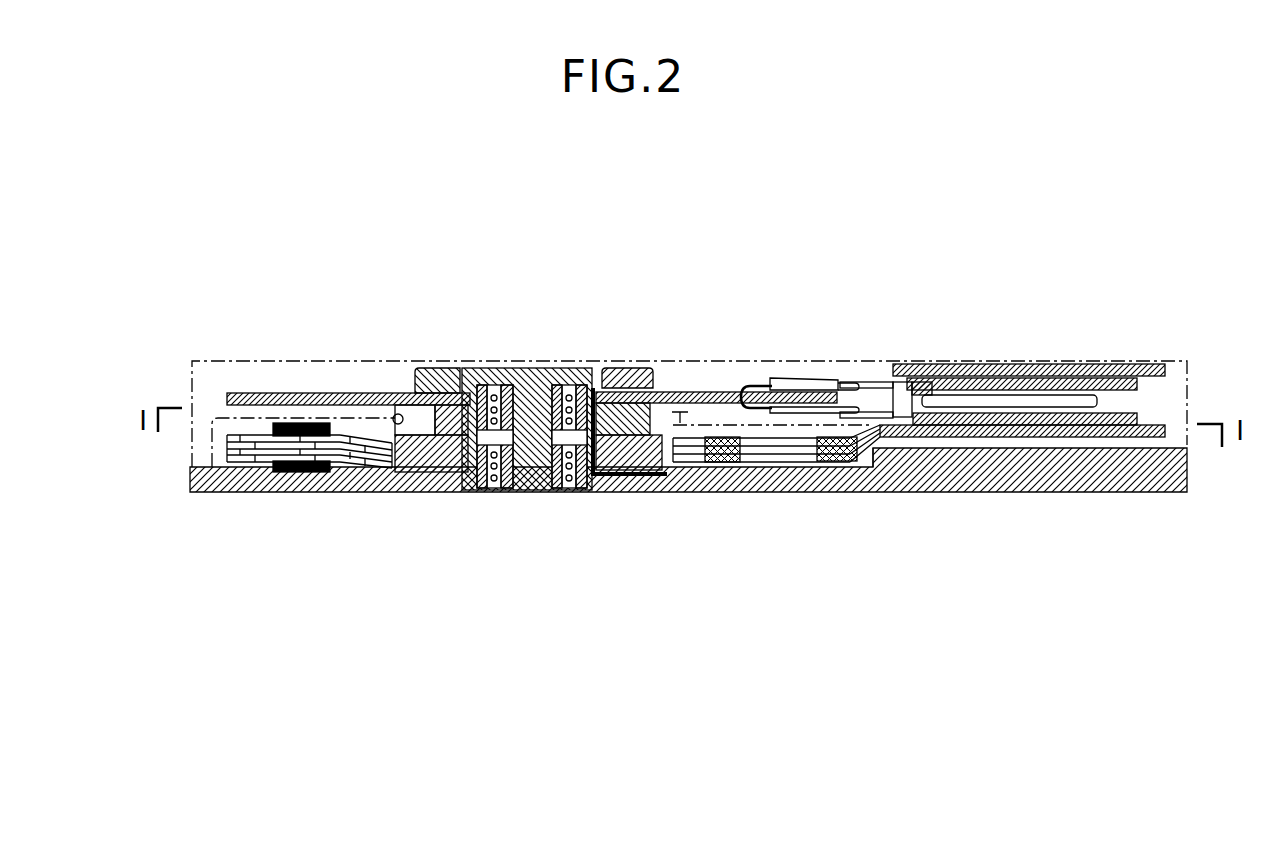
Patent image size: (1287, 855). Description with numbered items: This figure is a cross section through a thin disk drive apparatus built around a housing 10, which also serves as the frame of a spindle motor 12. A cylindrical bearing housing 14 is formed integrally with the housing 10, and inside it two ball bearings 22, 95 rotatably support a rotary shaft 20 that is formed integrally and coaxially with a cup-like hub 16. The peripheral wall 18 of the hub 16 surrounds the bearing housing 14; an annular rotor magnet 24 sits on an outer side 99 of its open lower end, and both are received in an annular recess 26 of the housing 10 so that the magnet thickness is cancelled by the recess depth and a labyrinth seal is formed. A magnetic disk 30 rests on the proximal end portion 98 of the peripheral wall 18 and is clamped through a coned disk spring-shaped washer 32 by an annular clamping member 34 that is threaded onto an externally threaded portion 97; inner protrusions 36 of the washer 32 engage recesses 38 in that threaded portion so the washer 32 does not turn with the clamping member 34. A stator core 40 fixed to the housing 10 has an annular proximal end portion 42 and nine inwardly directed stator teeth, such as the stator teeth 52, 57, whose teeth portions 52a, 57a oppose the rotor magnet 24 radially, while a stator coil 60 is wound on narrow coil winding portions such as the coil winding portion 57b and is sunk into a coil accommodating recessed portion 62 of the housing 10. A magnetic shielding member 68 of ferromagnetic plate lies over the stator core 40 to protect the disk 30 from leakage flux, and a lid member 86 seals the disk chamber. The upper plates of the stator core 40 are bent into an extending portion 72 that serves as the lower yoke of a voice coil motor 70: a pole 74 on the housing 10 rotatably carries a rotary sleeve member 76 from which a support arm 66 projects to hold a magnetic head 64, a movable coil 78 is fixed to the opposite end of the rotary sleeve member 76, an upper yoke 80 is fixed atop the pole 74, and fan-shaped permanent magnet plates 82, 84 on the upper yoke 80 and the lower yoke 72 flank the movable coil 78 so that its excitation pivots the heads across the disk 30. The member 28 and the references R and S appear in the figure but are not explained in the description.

The housing 10 is at (820, 465).
The spindle motor 12 is at (538, 490).
The bearing housing 14 is at (562, 490).
The hub 16 is at (482, 382).
The peripheral wall 18 is at (482, 485).
The rotary shaft 20 is at (560, 385).
The ball bearing 22 is at (510, 370).
The rotor magnet 24 is at (440, 475).
The annular recess 26 is at (422, 476).
The stationary block 28 is at (640, 478).
The magnetic disk 30 is at (736, 390).
The washer 32 is at (392, 395).
The clamping member 34 is at (432, 372).
The inner protrusions 36 is at (600, 370).
The recesses 38 is at (600, 392).
The stator core 40 is at (790, 465).
The annular proximal end portion 42 is at (226, 493).
The stator tooth 52 is at (744, 465).
The teeth portion 52a is at (696, 468).
The stator tooth 57 is at (352, 468).
The teeth portion 57a is at (362, 468).
The coil winding portion 57b is at (292, 472).
The stator coil 60 is at (300, 428).
The coil accommodating recessed portion 62 is at (262, 465).
The magnetic head 64 is at (772, 385).
The support arm 66 is at (858, 385).
The magnetic shielding member 68 is at (346, 398).
The voice coil motor 70 is at (1146, 388).
The extending portion 72 is at (1110, 470).
The pole 74 is at (942, 470).
The rotary sleeve member 76 is at (904, 385).
The movable coil 78 is at (1030, 397).
The upper yoke 80 is at (1086, 366).
The permanent magnet plate 82 is at (1134, 384).
The permanent magnet plate 84 is at (1126, 414).
The lid member 86 is at (228, 360).
The ball bearing 95 is at (506, 490).
The externally threaded portion 97 is at (626, 368).
The proximal end portion 98 is at (448, 382).
The outer side 99 is at (470, 478).
The rotation reference R is at (428, 348).
The spacing reference S is at (684, 346).